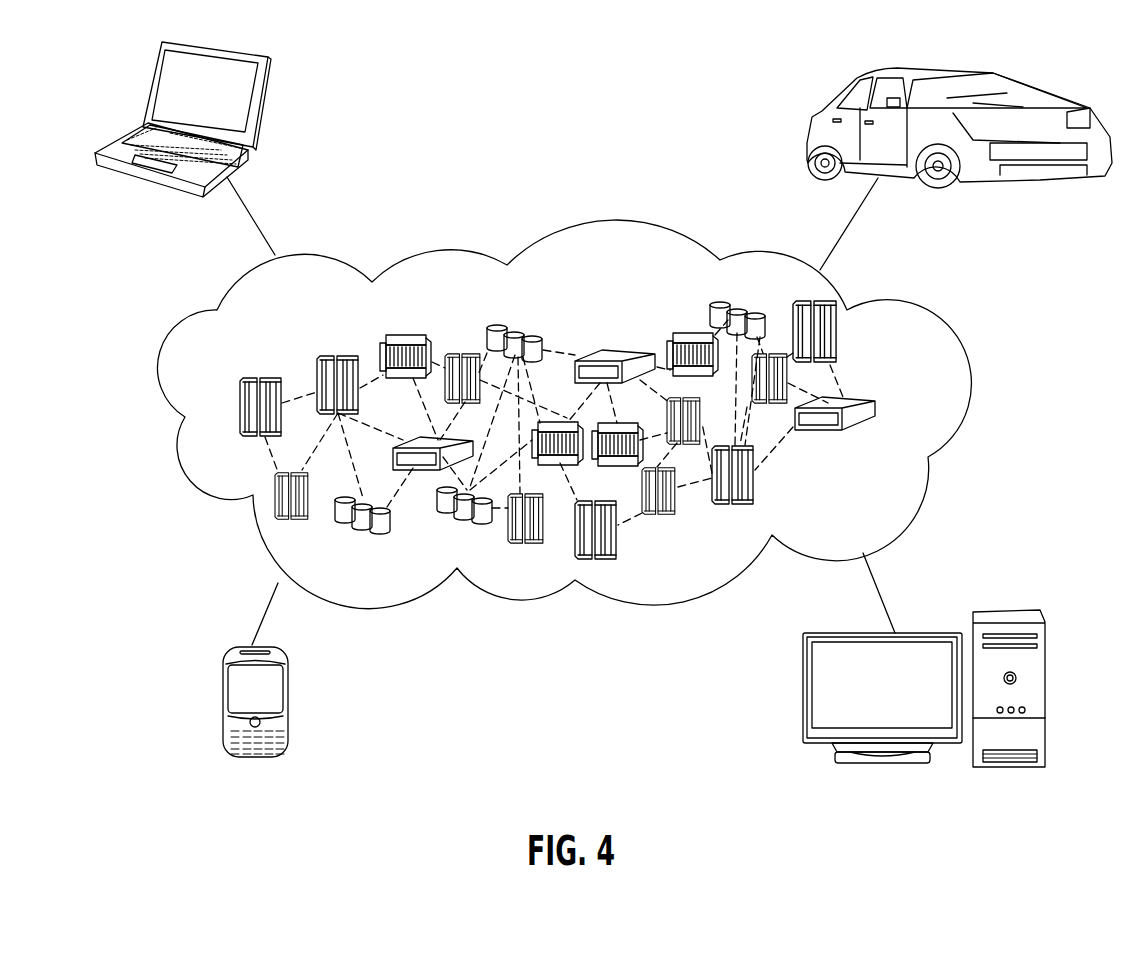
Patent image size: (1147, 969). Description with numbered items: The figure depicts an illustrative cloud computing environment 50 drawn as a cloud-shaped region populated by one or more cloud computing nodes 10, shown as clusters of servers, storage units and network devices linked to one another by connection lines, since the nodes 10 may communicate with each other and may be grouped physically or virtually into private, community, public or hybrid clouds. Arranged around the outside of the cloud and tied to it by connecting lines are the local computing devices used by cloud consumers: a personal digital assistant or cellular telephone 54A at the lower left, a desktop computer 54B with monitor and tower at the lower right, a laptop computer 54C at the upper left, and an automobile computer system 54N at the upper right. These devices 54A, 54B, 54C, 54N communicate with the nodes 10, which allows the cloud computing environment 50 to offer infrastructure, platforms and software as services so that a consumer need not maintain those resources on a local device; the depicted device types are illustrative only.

The cloud computing nodes 10 is at (910, 408).
The cloud computing environment 50 is at (937, 325).
The personal digital assistant (PDA) or cellular telephone 54A is at (222, 705).
The desktop computer 54B is at (1013, 610).
The laptop computer 54C is at (262, 105).
The automobile computer system 54N is at (813, 115).